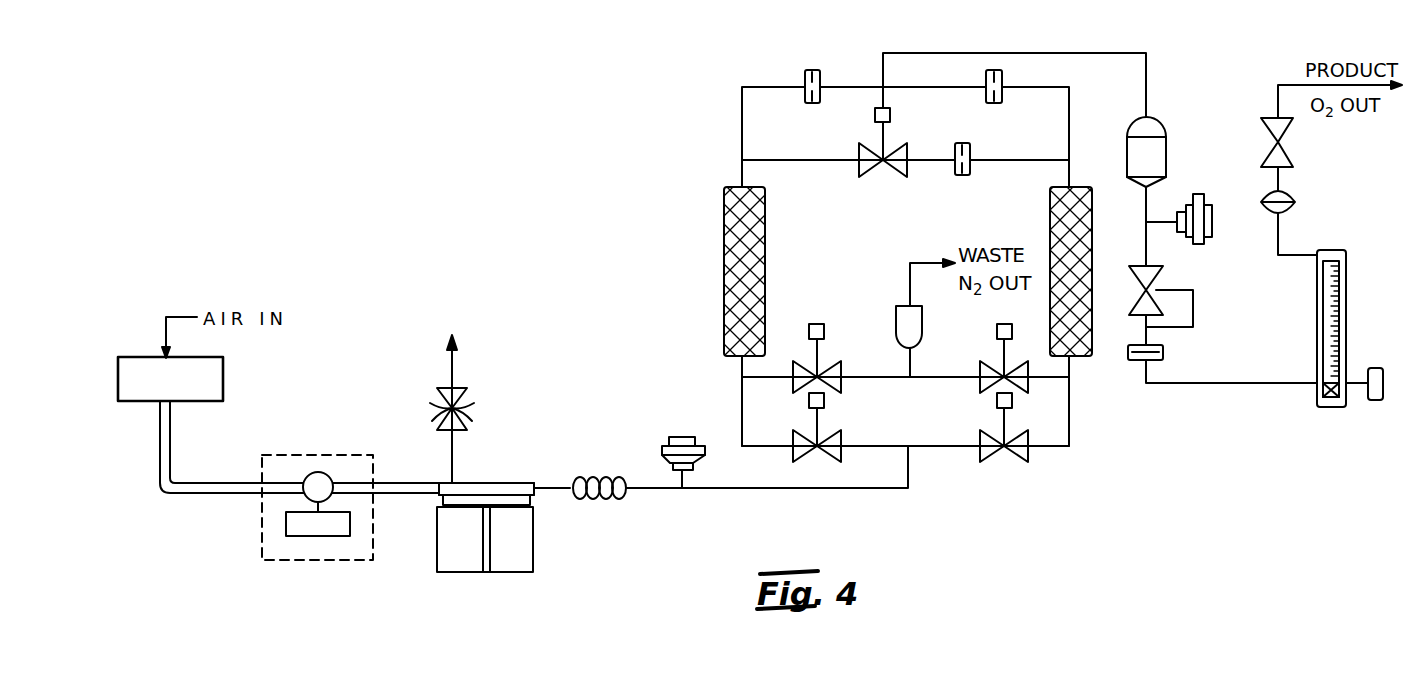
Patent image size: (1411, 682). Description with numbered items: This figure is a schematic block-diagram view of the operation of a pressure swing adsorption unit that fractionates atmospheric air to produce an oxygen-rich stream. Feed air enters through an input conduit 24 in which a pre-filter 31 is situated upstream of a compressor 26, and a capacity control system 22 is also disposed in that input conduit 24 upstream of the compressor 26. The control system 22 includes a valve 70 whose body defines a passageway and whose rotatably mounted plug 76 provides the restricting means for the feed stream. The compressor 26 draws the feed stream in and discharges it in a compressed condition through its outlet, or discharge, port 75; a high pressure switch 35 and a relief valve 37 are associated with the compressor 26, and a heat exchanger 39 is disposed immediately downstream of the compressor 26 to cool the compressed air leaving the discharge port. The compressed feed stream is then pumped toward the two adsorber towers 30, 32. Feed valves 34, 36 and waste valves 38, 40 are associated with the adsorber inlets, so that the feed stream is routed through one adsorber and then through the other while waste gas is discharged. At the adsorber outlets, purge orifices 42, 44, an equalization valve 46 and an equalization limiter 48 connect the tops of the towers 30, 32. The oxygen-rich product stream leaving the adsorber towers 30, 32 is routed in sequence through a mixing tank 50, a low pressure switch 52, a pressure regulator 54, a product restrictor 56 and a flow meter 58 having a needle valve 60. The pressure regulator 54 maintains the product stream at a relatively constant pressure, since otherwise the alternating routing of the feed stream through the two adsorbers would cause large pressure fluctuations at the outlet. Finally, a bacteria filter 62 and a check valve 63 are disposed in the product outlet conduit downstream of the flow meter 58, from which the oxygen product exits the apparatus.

The capacity control system 22 is at (250, 529).
The input conduit 24 is at (195, 493).
The compressor 26 is at (465, 558).
The adsorber tower 30 is at (737, 239).
The pre-filter 31 is at (118, 375).
The adsorber tower 32 is at (1077, 241).
The feed valve 34 is at (833, 433).
The high pressure switch 35 is at (660, 445).
The feed valve 36 is at (988, 435).
The relief valve 37 is at (470, 397).
The waste valve 38 is at (833, 362).
The heat exchanger 39 is at (602, 498).
The waste valve 40 is at (987, 362).
The purge orifice 42 is at (805, 72).
The purge orifice 44 is at (1003, 71).
The equalization valve 46 is at (858, 152).
The equalization limiter 48 is at (972, 150).
The mixing tank 50 is at (1167, 147).
The low pressure switch 52 is at (1213, 225).
The pressure regulator 54 is at (1197, 302).
The product restrictor 56 is at (1165, 350).
The flow meter 58 is at (1325, 408).
The needle valve 60 is at (1375, 400).
The bacteria filter 62 is at (1287, 188).
The check valve 63 is at (1290, 132).
The valve 70 is at (320, 471).
The outlet port 75 is at (437, 494).
The plug 76 is at (537, 491).